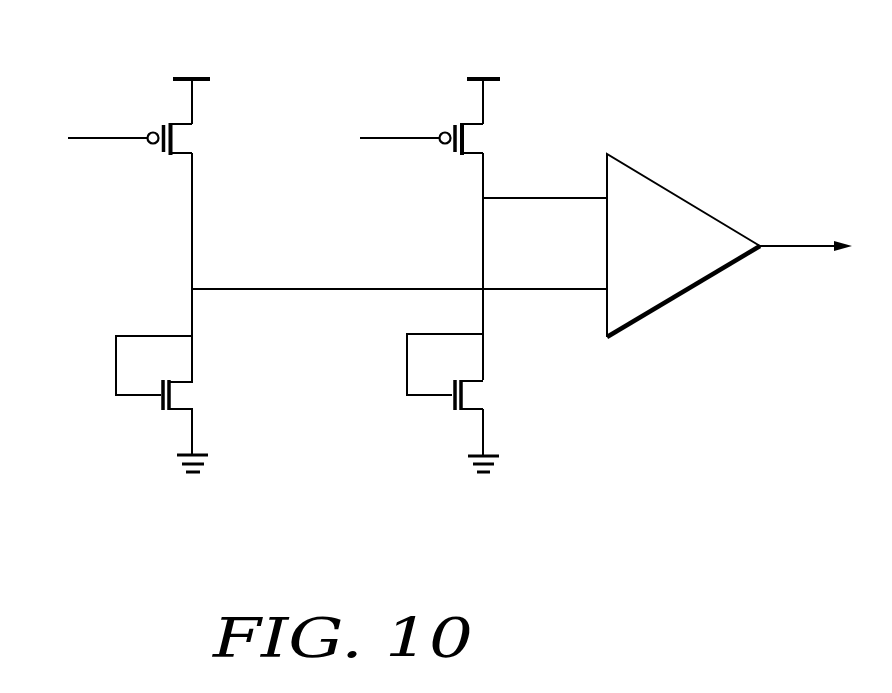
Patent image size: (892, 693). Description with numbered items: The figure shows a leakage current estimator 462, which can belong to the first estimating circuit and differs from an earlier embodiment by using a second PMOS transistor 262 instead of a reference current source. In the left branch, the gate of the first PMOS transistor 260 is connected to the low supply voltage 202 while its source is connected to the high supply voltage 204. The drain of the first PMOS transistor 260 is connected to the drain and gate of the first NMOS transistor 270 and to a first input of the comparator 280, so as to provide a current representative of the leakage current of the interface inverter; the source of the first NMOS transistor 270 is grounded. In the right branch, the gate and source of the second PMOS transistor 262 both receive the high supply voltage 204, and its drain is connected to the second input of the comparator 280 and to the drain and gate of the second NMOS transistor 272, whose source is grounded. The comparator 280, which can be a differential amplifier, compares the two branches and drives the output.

The V_L 202 is at (89, 123).
The V_H 204 is at (337, 90).
The PMOS transistor PE1 260 is at (194, 140).
The PMOS transistor PE2 262 is at (485, 140).
The NMOS transistor NE1 270 is at (178, 404).
The NMOS transistor NE2 272 is at (469, 403).
The comparator 280 is at (670, 288).
The leakage current estimator 462 is at (319, 299).